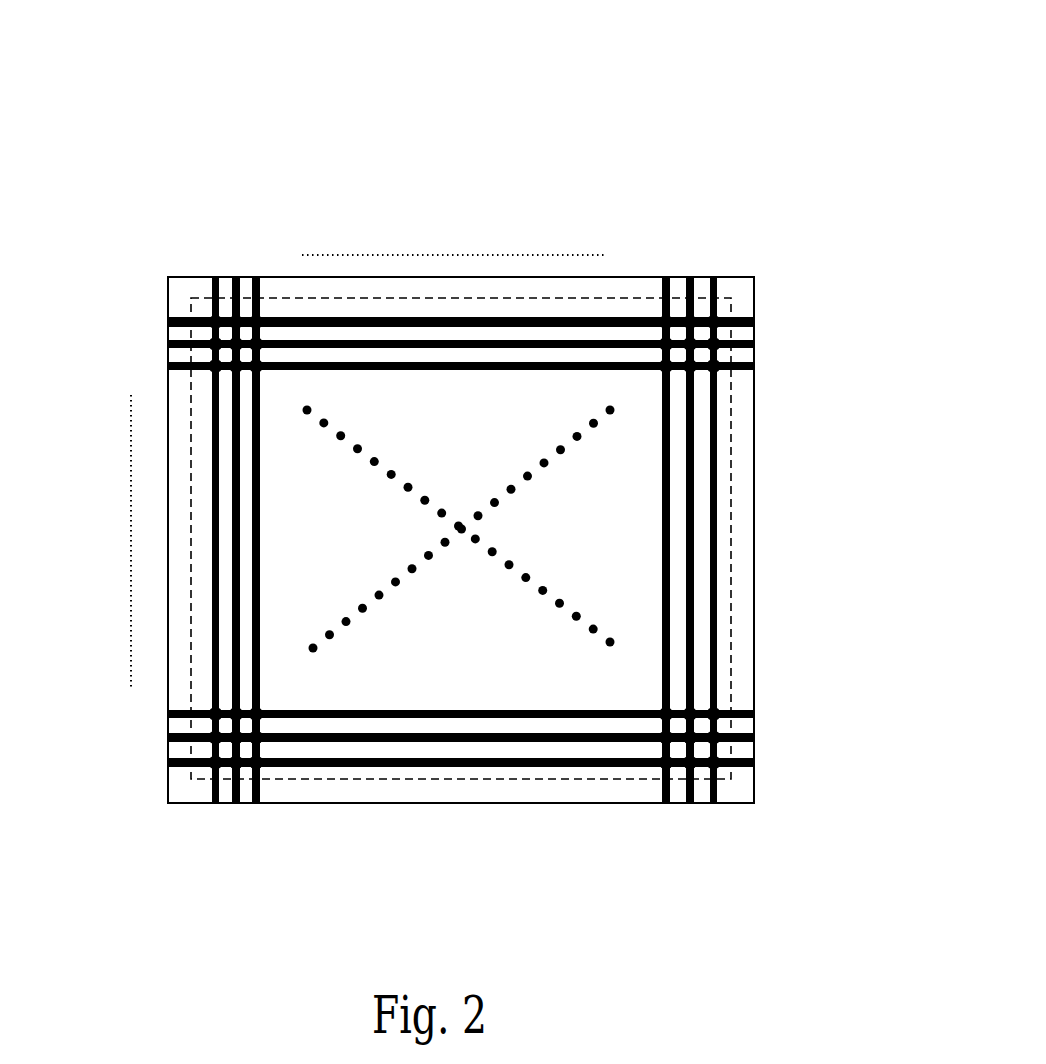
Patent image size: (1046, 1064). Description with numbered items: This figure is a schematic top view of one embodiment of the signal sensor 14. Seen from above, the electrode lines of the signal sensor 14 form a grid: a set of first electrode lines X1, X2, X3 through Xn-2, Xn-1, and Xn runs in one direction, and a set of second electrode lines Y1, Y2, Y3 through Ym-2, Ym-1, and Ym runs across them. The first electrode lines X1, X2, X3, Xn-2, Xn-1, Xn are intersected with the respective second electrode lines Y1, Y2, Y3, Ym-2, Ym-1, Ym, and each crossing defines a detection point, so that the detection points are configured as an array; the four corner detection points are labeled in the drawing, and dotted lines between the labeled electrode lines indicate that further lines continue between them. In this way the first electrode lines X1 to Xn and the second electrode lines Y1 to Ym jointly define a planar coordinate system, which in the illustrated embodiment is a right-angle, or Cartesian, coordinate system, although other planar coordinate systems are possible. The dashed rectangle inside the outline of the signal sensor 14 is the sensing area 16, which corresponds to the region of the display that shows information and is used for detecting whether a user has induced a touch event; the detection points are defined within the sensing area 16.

The signal sensor 14 is at (746, 68).
The sensing area 16 is at (730, 533).
The first electrode line X1 is at (205, 513).
The first electrode line X2 is at (234, 513).
The first electrode line X3 is at (257, 512).
The first electrode line Xn-2 is at (654, 503).
The first electrode line Xn-1 is at (678, 503).
The first electrode line Xn is at (714, 511).
The second electrode line Y1 is at (435, 773).
The second electrode line Y2 is at (435, 743).
The second electrode line Y3 is at (435, 715).
The second electrode line Ym-2 is at (417, 373).
The second electrode line Ym-1 is at (417, 345).
The second electrode line Ym is at (432, 315).